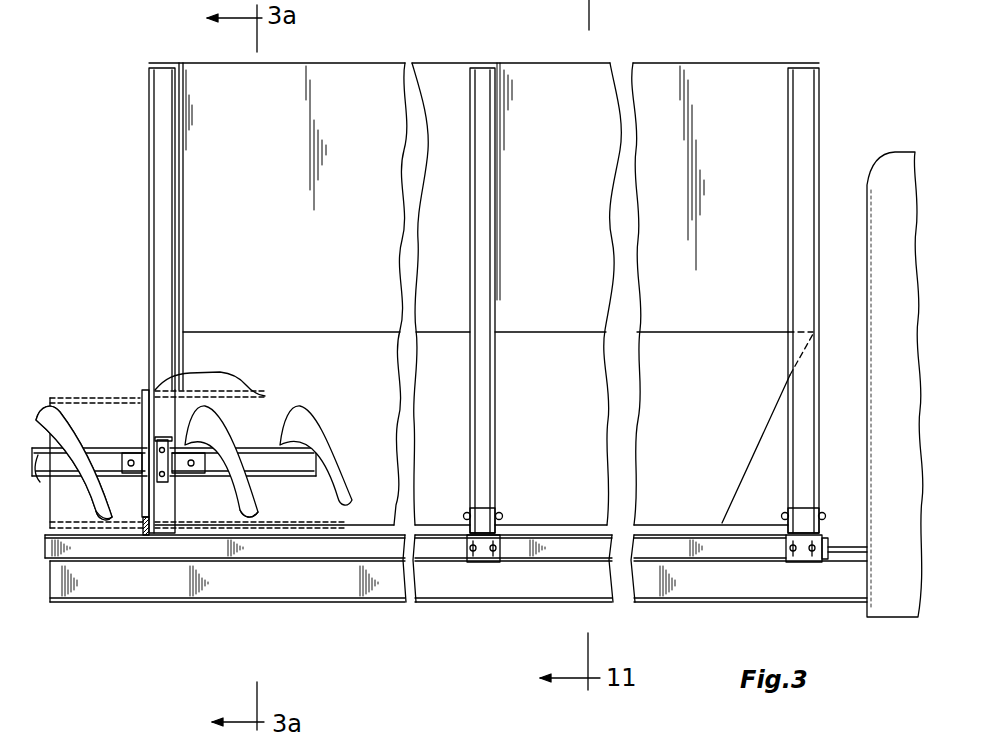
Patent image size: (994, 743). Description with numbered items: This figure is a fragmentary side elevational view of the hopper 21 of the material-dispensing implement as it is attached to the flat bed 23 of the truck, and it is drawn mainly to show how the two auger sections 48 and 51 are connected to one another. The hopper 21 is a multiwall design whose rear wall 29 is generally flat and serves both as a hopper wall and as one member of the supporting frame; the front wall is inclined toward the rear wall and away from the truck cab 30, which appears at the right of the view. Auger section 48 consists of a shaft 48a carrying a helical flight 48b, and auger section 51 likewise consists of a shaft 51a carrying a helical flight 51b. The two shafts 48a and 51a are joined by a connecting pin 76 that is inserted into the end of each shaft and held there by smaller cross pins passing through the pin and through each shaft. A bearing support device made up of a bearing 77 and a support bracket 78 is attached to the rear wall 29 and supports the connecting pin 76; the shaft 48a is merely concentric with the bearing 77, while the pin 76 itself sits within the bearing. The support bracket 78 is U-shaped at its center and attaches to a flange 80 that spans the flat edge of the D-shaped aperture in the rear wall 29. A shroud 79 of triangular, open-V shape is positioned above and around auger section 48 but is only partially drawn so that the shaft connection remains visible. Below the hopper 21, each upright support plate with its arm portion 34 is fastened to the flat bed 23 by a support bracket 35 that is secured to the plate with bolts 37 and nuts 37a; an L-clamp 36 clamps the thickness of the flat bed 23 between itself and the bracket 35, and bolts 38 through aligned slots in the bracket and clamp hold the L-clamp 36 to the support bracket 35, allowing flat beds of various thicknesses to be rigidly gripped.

The hopper 21 is at (330, 95).
The flat bed 23 is at (180, 548).
The rear wall 29 is at (149, 206).
The cab 30 is at (888, 178).
The arm portion 34 is at (490, 63).
The support bracket 35 is at (482, 508).
The L-clamp 36 is at (483, 562).
The bolt 37 is at (465, 513).
The nut 37a is at (502, 512).
The bolt 38 is at (502, 556).
The auger section 48 is at (255, 450).
The shaft 48a is at (285, 470).
The helical flight 48b is at (253, 515).
The auger section 51 is at (50, 480).
The shaft 51a is at (100, 460).
The helical flight 51b is at (105, 500).
The connecting pin 76 is at (185, 488).
The bearing 77 is at (138, 490).
The support bracket 78 is at (162, 482).
The shroud 79 is at (230, 390).
The flange 80 is at (172, 440).